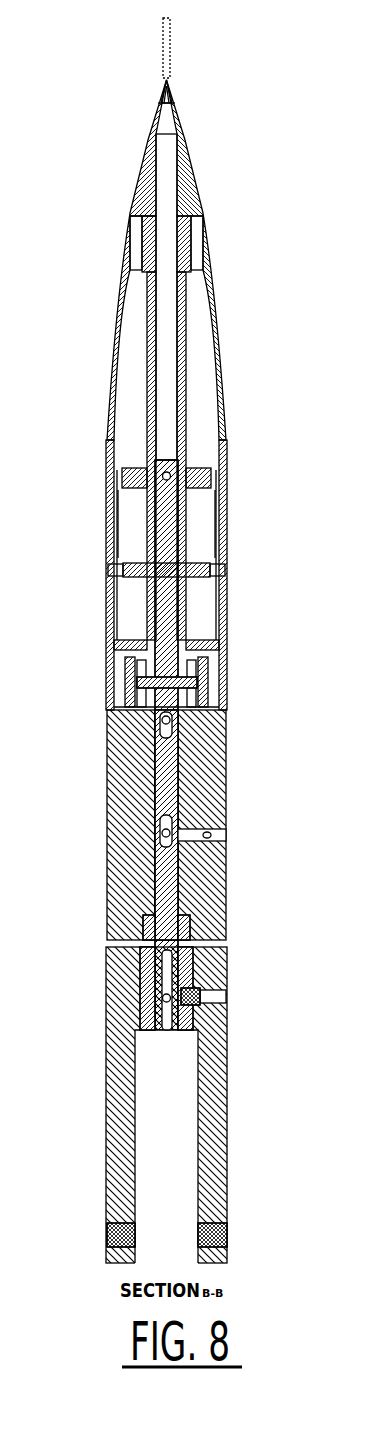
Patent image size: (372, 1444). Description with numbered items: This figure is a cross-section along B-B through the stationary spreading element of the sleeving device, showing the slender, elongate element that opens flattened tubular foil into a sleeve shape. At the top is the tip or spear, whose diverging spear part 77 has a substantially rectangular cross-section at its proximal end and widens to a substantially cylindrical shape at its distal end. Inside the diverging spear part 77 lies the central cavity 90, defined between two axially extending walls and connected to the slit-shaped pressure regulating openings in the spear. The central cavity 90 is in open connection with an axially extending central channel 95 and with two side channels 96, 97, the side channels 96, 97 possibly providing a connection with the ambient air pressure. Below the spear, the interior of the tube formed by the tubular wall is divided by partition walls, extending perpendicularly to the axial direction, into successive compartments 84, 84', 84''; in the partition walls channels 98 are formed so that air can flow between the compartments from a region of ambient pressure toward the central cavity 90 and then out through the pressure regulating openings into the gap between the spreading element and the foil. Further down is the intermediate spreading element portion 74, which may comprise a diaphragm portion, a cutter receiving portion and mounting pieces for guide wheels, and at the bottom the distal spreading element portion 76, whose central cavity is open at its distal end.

The distal spreading element portion 76 is at (164, 51).
The central cavity 90 is at (160, 118).
The diverging spear part 77 is at (187, 152).
The side channel 96 is at (131, 232).
The side channel 97 is at (195, 236).
The central channel 95 is at (162, 322).
The compartment 84 is at (206, 558).
The compartment 84' is at (215, 513).
The channel in partition wall 98 is at (213, 567).
The compartment 84'' is at (222, 647).
The intermediate spreading element portion 74 is at (208, 772).